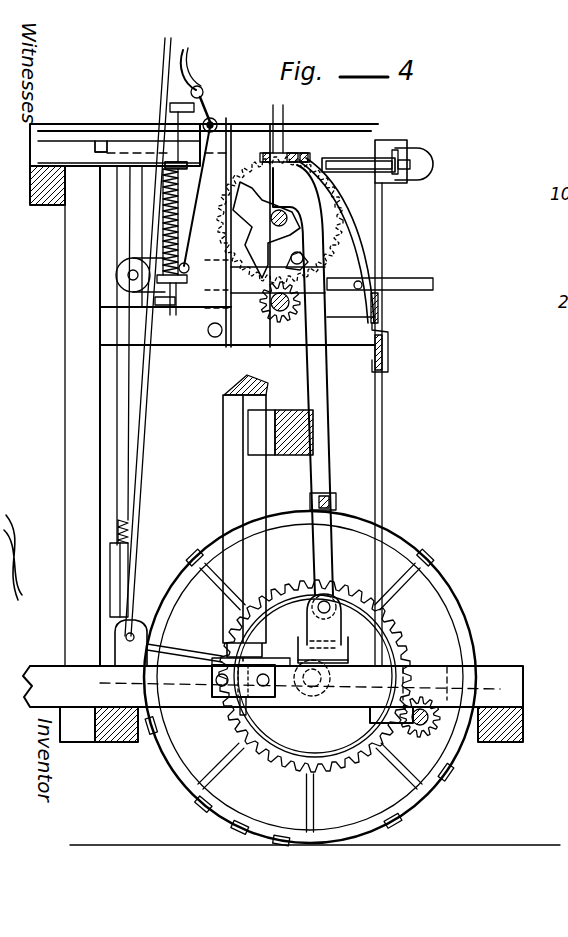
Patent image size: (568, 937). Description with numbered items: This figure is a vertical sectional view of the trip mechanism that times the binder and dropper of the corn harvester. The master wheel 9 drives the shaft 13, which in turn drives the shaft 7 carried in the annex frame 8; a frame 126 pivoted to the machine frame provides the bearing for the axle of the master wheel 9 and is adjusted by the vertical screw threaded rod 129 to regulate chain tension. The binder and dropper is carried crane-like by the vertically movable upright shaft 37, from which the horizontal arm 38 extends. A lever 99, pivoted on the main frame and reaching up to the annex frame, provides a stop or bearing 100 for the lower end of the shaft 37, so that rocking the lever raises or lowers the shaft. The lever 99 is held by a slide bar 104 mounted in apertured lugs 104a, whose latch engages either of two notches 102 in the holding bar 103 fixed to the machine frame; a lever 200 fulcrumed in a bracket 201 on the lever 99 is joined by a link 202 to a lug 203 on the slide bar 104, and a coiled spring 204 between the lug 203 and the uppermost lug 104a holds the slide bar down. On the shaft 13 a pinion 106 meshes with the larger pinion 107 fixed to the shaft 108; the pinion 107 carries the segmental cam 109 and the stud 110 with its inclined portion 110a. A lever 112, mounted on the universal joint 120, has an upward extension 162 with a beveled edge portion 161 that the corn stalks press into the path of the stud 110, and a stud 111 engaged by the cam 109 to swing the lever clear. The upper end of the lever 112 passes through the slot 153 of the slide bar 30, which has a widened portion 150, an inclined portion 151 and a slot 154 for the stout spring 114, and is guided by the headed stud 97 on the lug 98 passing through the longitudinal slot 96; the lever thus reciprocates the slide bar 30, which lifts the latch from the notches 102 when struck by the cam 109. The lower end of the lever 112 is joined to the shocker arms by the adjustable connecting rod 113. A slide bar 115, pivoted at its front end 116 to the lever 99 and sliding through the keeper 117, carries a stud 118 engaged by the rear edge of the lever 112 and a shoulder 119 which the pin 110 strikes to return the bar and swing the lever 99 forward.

The shaft 7 is at (500, 688).
The annex frame 8 is at (45, 206).
The master wheel 9 is at (180, 765).
The shaft 13 is at (280, 325).
The slide bar 30 is at (436, 163).
The upright shaft 37 is at (233, 467).
The arm 38 is at (314, 436).
The longitudinal slot 96 is at (418, 160).
The headed stud 97 is at (398, 172).
The lug 98 is at (408, 140).
The lever 99 is at (143, 397).
The stop or bearing 100 is at (235, 655).
The notches 102 is at (103, 140).
The holding bar 103 is at (62, 148).
The slide bar 104 is at (133, 155).
The apertured lugs 104a is at (160, 178).
The pinion 106 is at (373, 318).
The pinion 107 is at (335, 238).
The shaft 108 is at (345, 212).
The segmental cam 109 is at (300, 148).
The stud or pin 110 is at (385, 291).
The inclined portion 110a is at (289, 249).
The stud or projection 111 is at (330, 215).
The lever 112 is at (320, 399).
The adjustable connecting rod 113 is at (337, 500).
The stout spring 114 is at (380, 309).
The slide bar 115 is at (434, 285).
The front end 116 is at (128, 287).
The keeper or guide 117 is at (492, 292).
The stud 118 is at (362, 292).
The shoulder 119 is at (257, 250).
The universal joint 120 is at (327, 630).
The frame 126 is at (280, 664).
The screw threaded rod 129 is at (122, 412).
The widened portion 150 is at (402, 136).
The inclined portion 151 is at (288, 140).
The elongated slot 153 is at (388, 140).
The elongated slot 154 is at (396, 124).
The beveled edge portion 161 is at (268, 219).
The upward extension 162 is at (286, 153).
The lever 200 is at (213, 116).
The bracket 201 is at (201, 62).
The link 202 is at (160, 290).
The lug 203 is at (184, 274).
The coiled spring 204 is at (158, 278).